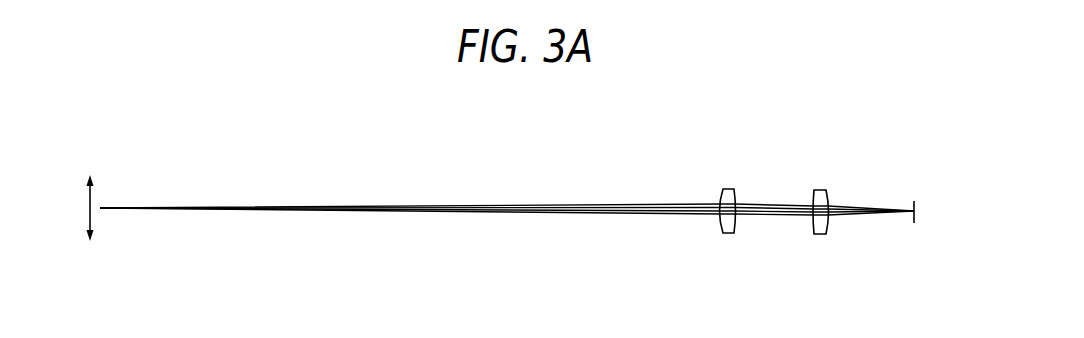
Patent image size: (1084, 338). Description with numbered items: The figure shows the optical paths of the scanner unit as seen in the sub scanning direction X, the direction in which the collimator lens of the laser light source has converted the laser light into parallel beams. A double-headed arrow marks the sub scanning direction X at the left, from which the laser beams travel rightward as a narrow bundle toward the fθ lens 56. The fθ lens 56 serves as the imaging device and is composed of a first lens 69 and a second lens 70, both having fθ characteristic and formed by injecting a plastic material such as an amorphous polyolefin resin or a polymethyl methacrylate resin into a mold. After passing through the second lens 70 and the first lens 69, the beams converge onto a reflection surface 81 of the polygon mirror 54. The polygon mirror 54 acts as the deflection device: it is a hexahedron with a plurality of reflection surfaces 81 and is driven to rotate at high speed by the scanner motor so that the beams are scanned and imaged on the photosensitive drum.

The sub scanning direction X is at (88, 207).
The fθ lens 56 is at (774, 167).
The second lens 70 is at (732, 187).
The first lens 69 is at (811, 189).
The reflection surface 81 is at (913, 224).
The polygon mirror 54 is at (928, 230).